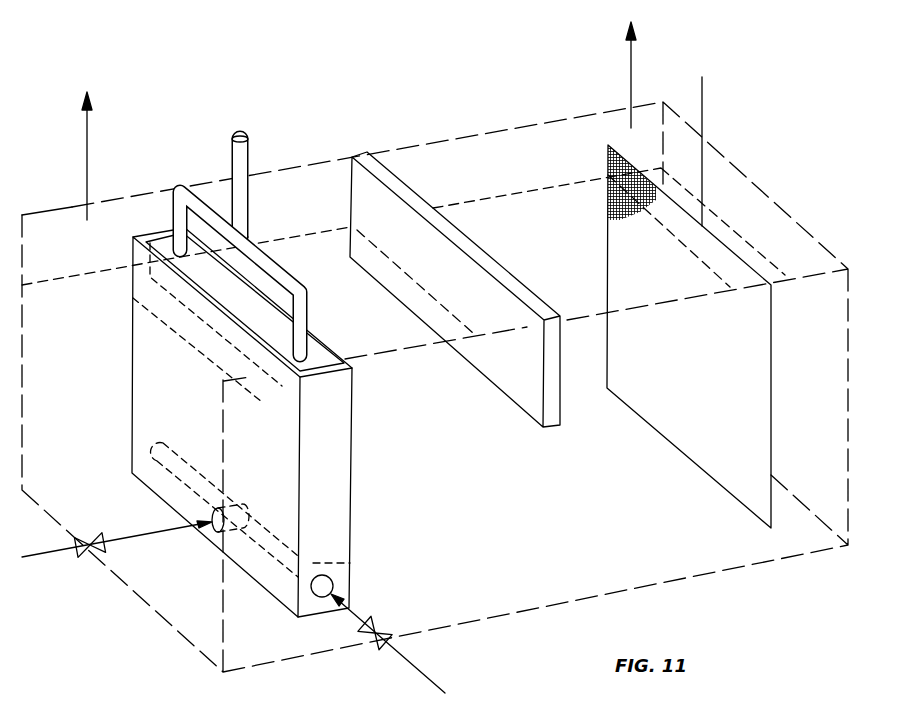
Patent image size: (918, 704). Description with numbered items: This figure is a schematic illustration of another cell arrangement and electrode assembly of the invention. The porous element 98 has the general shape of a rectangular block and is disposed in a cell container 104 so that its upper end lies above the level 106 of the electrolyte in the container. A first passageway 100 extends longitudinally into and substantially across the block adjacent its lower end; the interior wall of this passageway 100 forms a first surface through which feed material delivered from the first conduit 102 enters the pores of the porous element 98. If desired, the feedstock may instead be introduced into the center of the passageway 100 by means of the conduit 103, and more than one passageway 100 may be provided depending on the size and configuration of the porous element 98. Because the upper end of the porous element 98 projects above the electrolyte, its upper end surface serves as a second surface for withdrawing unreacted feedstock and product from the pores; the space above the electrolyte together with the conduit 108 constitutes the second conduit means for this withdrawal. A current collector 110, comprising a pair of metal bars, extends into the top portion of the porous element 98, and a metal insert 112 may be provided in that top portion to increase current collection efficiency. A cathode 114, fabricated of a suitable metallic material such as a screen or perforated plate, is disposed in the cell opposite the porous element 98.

The porous element 98 is at (350, 480).
The first passageway 100 is at (347, 565).
The first conduit 102 is at (58, 553).
The conduit 103 is at (435, 684).
The cell container 104 is at (668, 580).
The level of the electrolyte 106 is at (500, 197).
The conduit 108 is at (87, 152).
The current collector 110 is at (302, 284).
The metal insert 112 is at (316, 350).
The cathode 114 is at (663, 280).